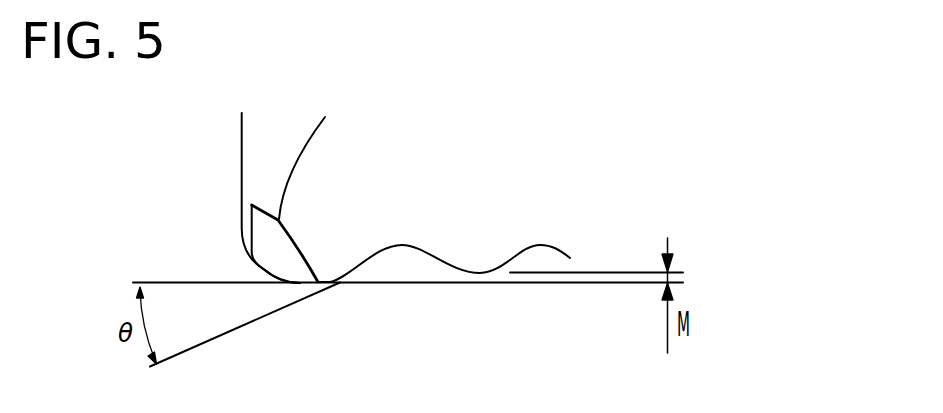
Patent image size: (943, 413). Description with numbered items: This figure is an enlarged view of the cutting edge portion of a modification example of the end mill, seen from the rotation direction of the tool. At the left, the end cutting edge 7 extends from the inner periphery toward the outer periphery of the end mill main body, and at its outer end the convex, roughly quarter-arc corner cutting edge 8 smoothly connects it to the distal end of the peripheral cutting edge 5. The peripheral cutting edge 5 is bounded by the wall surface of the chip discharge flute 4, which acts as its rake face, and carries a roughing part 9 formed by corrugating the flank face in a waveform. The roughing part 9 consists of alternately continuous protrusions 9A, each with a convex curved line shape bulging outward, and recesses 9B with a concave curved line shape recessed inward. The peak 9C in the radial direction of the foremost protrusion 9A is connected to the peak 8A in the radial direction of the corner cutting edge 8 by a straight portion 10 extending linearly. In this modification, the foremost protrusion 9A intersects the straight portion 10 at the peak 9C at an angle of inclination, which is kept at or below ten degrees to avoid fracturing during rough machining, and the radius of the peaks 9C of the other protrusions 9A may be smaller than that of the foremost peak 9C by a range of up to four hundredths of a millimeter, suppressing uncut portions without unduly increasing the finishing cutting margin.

The chip discharge flute 4 is at (468, 163).
The peripheral cutting edge 5 is at (300, 284).
The end cutting edge 7 is at (241, 148).
The corner cutting edge 8 is at (253, 265).
The peak in the radial direction of the corner cutting edge 8A is at (299, 284).
The roughing part 9 is at (563, 261).
The protrusion 9A is at (365, 273).
The recess 9B is at (542, 248).
The peak in the radial direction of the foremost protrusion 9C is at (341, 286).
The straight portion 10 is at (245, 325).